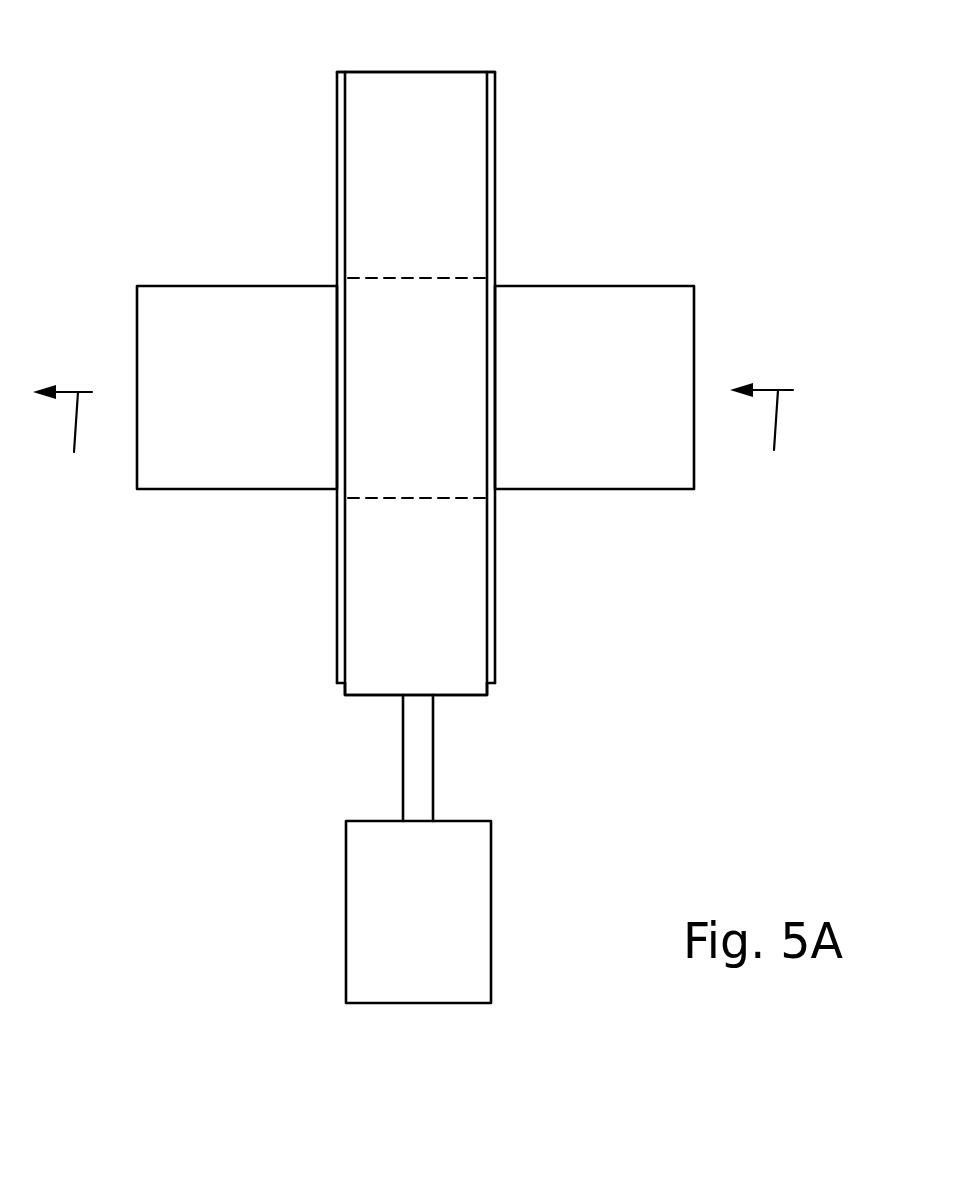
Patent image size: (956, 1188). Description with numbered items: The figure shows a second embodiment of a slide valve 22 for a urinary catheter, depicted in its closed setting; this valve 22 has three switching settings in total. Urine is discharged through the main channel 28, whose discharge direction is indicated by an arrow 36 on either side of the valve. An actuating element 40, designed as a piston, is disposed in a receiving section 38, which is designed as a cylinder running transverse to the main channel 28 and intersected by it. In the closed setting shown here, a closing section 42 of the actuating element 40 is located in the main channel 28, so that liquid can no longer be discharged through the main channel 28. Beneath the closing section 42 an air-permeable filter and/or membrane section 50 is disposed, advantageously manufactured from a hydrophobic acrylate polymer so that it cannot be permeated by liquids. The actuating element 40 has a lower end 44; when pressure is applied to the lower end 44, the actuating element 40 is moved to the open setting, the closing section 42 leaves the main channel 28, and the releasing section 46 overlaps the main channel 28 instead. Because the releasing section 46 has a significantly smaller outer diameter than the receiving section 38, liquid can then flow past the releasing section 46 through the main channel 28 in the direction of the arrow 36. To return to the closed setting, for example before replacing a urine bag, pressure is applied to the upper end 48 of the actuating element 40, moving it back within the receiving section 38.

The valve 22 is at (640, 555).
The main channel 28 is at (694, 317).
The arrow 36 is at (413, 438).
The receiving section 38 is at (495, 213).
The actuating element 40 is at (363, 217).
The closing section 42 is at (463, 447).
The lower end 44 is at (458, 922).
The releasing section 46 is at (425, 782).
The upper end 48 is at (457, 92).
The filter and/or membrane section 50 is at (472, 603).